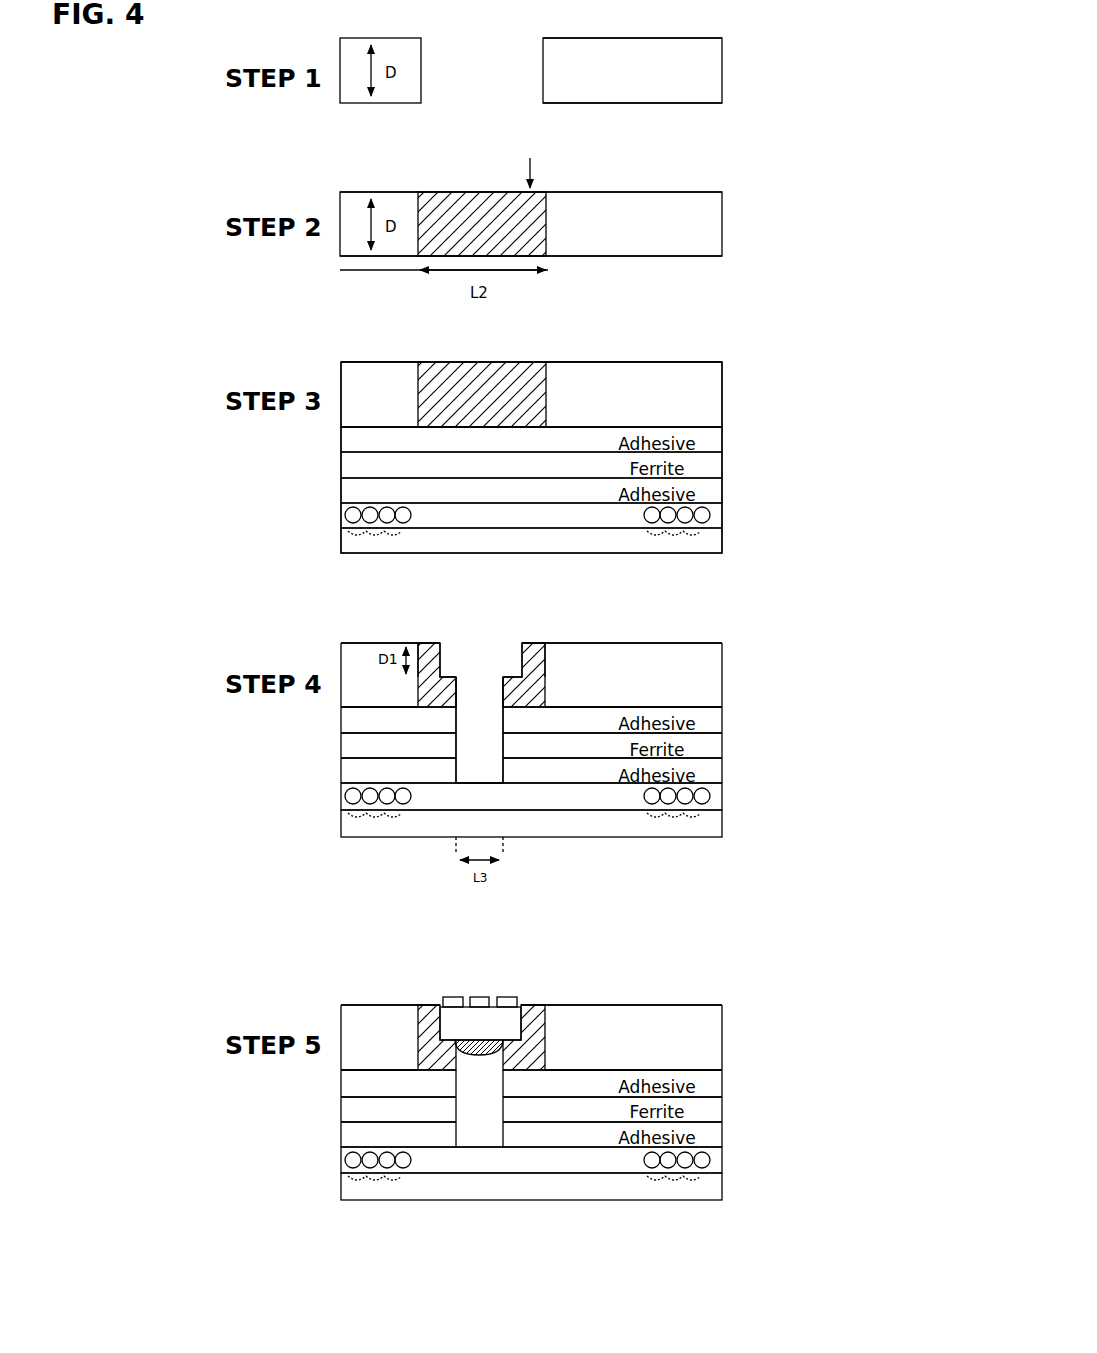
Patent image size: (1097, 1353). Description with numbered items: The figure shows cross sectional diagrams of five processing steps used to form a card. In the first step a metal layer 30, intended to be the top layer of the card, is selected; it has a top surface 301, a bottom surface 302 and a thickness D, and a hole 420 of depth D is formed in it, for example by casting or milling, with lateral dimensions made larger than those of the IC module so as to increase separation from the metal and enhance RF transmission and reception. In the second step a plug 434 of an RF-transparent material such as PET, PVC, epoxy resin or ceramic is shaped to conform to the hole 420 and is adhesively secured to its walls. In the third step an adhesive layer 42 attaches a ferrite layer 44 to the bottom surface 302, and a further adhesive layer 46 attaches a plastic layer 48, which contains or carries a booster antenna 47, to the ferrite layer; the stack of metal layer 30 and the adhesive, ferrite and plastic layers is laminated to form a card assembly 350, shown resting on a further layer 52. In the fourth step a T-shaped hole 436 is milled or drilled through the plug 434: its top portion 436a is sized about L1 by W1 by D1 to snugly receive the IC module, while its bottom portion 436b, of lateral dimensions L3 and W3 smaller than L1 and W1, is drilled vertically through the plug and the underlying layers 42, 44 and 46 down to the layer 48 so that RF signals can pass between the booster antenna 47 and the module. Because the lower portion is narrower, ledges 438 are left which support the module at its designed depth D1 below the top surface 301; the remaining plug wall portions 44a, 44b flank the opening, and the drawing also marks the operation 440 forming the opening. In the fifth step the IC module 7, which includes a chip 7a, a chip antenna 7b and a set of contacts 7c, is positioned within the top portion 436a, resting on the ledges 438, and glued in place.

The hole 420 is at (474, 97).
The top surface 301 is at (695, 1005).
The metal layer 30 is at (762, 1031).
The bottom surface 302 is at (702, 1068).
The plug 434 is at (545, 700).
The card assembly 350 is at (605, 457).
The adhesive layer 42 is at (772, 1093).
The ferrite layer 44 is at (772, 1118).
The adhesive layer 46 is at (772, 1144).
The plastic layer 48 is at (772, 1170).
The base layer 52 is at (772, 1194).
The booster antenna 47 is at (524, 864).
The ledges 438 is at (450, 675).
The T-shaped hole 436 is at (466, 652).
The top portion of T-shaped hole 436a is at (481, 660).
The bottom portion of T-shaped hole 436b is at (479, 730).
The removal step 440 is at (523, 643).
The first core wall portion 44a is at (419, 648).
The second core wall portion 44b is at (545, 645).
The IC module 7 is at (505, 1028).
The chip 7a is at (472, 1033).
The chip antenna 7b is at (478, 1056).
The contacts 7c is at (453, 997).